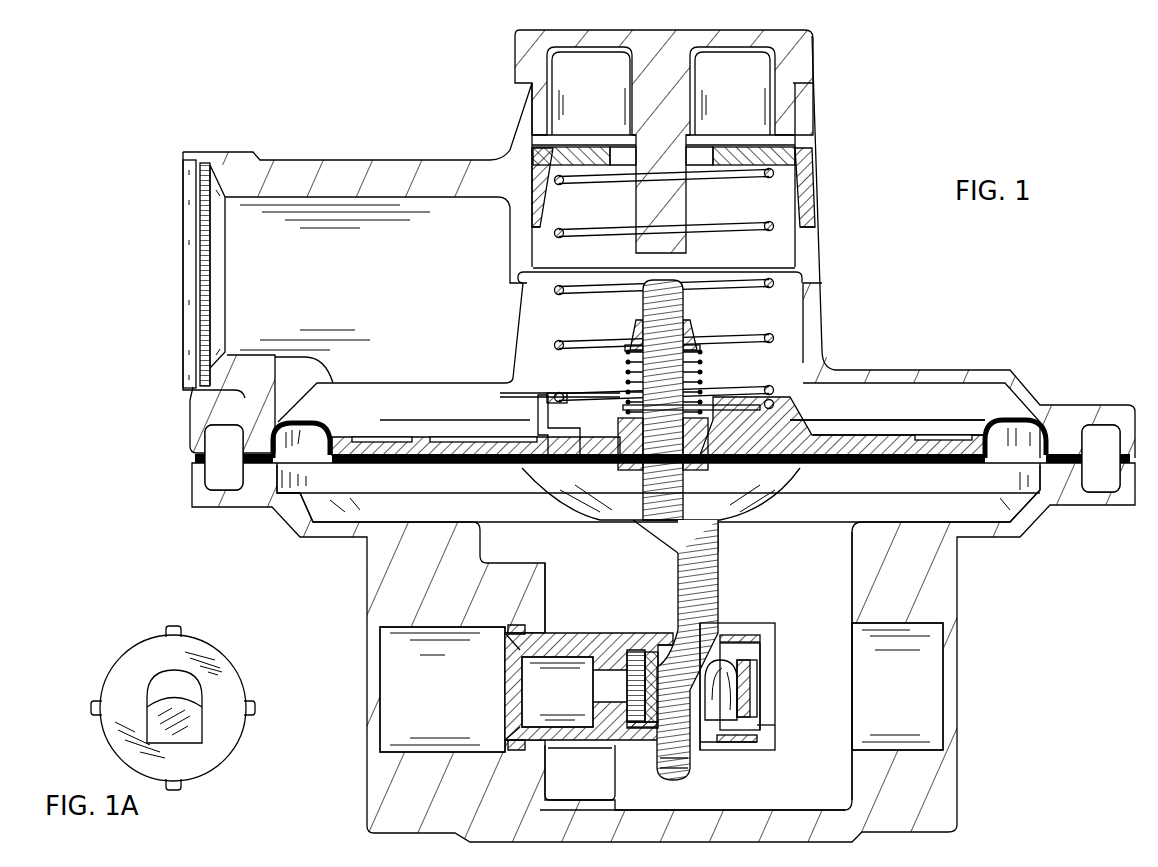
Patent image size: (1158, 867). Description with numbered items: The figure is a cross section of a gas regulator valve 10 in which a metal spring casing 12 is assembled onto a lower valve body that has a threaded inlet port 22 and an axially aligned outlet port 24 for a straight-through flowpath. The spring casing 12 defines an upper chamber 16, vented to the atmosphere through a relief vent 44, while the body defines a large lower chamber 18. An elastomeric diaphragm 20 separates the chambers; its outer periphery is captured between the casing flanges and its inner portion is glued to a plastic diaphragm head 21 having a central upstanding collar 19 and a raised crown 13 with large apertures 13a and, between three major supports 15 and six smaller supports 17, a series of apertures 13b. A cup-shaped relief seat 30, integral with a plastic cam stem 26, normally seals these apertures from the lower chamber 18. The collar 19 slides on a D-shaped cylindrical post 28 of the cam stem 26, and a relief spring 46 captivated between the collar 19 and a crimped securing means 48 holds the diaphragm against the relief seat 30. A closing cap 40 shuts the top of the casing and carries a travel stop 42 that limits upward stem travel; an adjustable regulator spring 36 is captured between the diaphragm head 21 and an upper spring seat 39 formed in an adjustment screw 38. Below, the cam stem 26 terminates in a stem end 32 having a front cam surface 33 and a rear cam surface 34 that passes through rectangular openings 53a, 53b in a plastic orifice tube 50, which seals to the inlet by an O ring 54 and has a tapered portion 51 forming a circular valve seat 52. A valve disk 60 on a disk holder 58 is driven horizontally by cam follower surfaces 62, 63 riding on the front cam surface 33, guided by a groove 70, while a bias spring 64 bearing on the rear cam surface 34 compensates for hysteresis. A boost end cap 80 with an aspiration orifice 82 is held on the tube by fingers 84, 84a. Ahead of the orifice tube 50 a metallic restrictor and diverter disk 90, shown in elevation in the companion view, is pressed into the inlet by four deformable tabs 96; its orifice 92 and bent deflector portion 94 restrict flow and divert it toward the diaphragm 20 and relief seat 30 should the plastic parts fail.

In FIG. 1, the regulator valve 10 is at (401, 95).
In FIG. 1, the spring casing 12 is at (822, 253).
In FIG. 1, the raised crown 13 is at (718, 423).
In FIG. 1, the large apertures 13a is at (572, 420).
In FIG. 1, the apertures 13b is at (530, 410).
In FIG. 1, the major supports 15 is at (795, 410).
In FIG. 1, the upper chamber 16 is at (790, 312).
In FIG. 1, the smaller supports 17 is at (537, 438).
In FIG. 1, the lower chamber 18 is at (821, 552).
In FIG. 1, the cylindrical collar 19 is at (628, 470).
In FIG. 1, the diaphragm 20 is at (400, 466).
In FIG. 1, the diaphragm head 21 is at (902, 438).
In FIG. 1, the inlet port 22 is at (370, 665).
In FIG. 1, the outlet port 24 is at (955, 680).
In FIG. 1, the cam stem 26 is at (718, 548).
In FIG. 1, the cylindrical post 28 is at (687, 302).
In FIG. 1, the relief seat 30 is at (790, 506).
In FIG. 1, the stem end 32 is at (695, 762).
In FIG. 1, the front cam surface 33 is at (664, 782).
In FIG. 1, the rear cam surface 34 is at (762, 730).
In FIG. 1, the regulator spring 36 is at (738, 222).
In FIG. 1, the adjustment screw 38 is at (795, 138).
In FIG. 1, the upper spring seat 39 is at (803, 182).
In FIG. 1, the closing cap 40 is at (815, 44).
In FIG. 1, the travel stop 42 is at (640, 90).
In FIG. 1, the relief vent 44 is at (183, 256).
In FIG. 1, the relief spring 46 is at (695, 378).
In FIG. 1, the securing means 48 is at (635, 330).
In FIG. 1, the orifice tube 50 is at (582, 633).
In FIG. 1, the tapered portion 51 is at (510, 705).
In FIG. 1, the valve seat 52 is at (605, 688).
In FIG. 1, the rectangular opening 53a is at (673, 633).
In FIG. 1, the rectangular opening 53b is at (628, 748).
In FIG. 1, the O ring 54 is at (517, 627).
In FIG. 1, the disk holder 58 is at (645, 660).
In FIG. 1, the valve disk 60 is at (640, 727).
In FIG. 1, the cam follower surface 62 is at (660, 662).
In FIG. 1, the cam follower surface 63 is at (697, 692).
In FIG. 1, the bias spring 64 is at (720, 690).
In FIG. 1, the groove 70 is at (755, 692).
In FIG. 1, the boost end cap 80 is at (776, 632).
In FIG. 1, the orifice 82 is at (773, 675).
In FIG. 1, the finger 84 is at (737, 623).
In FIG. 1, the finger 84a is at (727, 745).
In FIG. 1A, the restrictor and diverter disk 90 is at (232, 658).
In FIG. 1A, the orifice 92 is at (158, 677).
In FIG. 1A, the deflector portion 94 is at (192, 730).
In FIG. 1A, the deformable tabs 96 is at (180, 628).